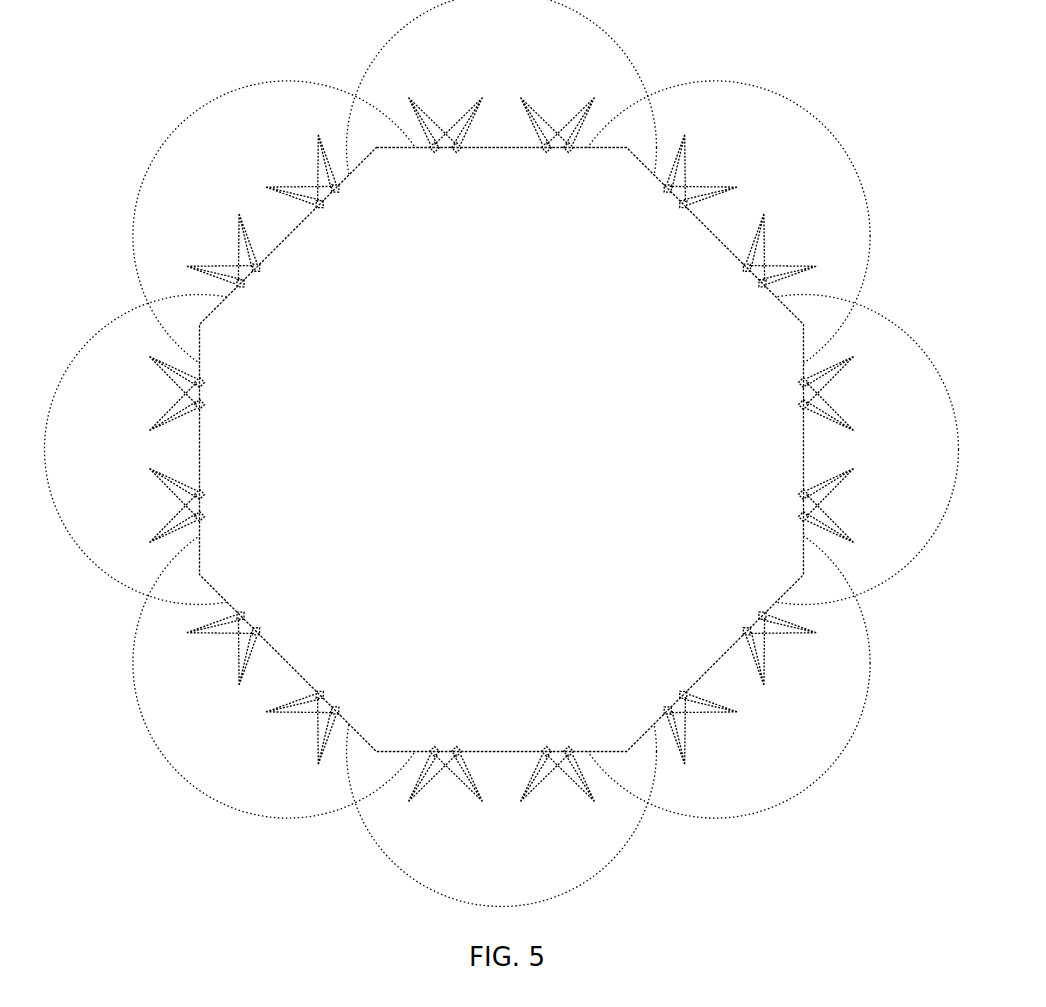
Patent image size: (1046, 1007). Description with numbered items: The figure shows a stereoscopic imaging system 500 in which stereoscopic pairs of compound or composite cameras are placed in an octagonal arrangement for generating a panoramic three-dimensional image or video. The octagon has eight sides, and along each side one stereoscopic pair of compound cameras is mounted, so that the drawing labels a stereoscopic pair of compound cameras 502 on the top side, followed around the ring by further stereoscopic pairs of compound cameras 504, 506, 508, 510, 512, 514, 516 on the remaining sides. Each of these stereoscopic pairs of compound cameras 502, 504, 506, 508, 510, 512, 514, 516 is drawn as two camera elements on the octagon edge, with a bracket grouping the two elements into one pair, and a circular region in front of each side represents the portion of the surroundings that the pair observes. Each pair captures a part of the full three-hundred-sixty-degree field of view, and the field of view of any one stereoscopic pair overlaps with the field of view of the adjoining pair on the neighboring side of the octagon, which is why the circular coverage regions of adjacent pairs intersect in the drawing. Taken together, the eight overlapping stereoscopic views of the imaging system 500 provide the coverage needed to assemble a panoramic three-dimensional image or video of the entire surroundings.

The stereoscopic imaging system 500 is at (502, 470).
The stereoscopic pair of compound cameras 502 is at (502, 164).
The stereoscopic pair of compound cameras 504 is at (710, 240).
The stereoscopic pair of compound cameras 506 is at (776, 450).
The stereoscopic pair of compound cameras 508 is at (713, 661).
The stereoscopic pair of compound cameras 510 is at (502, 733).
The stereoscopic pair of compound cameras 512 is at (290, 660).
The stereoscopic pair of compound cameras 514 is at (226, 450).
The stereoscopic pair of compound cameras 516 is at (291, 239).